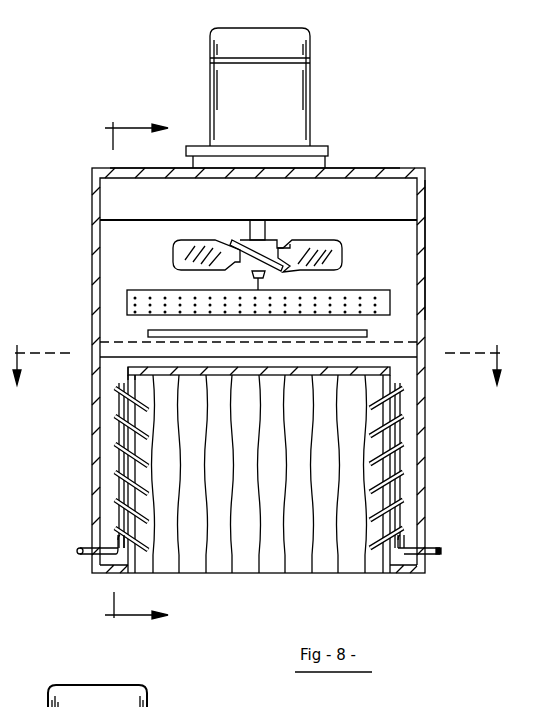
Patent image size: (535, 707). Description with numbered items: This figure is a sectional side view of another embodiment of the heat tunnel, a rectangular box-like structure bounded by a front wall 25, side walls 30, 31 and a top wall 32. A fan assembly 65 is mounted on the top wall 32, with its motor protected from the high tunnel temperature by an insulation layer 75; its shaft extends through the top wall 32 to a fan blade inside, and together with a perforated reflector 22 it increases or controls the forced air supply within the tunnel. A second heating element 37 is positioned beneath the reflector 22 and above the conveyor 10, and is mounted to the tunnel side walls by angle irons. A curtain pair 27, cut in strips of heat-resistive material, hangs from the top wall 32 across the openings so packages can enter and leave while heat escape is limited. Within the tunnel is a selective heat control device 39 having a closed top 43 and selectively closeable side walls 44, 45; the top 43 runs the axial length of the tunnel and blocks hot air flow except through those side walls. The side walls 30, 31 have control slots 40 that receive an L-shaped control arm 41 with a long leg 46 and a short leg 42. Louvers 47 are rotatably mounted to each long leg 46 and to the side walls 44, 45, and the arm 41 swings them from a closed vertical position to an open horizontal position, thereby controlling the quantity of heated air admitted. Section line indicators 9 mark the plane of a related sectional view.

The fan assembly 65 is at (318, 72).
The top wall 32 is at (397, 168).
The insulation layer 75 is at (400, 202).
The front wall 25 is at (428, 230).
The side wall 30 is at (412, 284).
The side wall 31 is at (90, 273).
The reflector 22 is at (353, 282).
The second heating element 37 is at (373, 333).
The closed top 43 is at (418, 348).
The side wall 44 is at (405, 378).
The side wall 45 is at (128, 370).
The curtain pair 27 is at (375, 437).
The selective heat control device 39 is at (252, 466).
The louvers 47 is at (115, 461).
The long leg 46 is at (116, 494).
The control slots 40 is at (91, 525).
The L-shaped control arm 41 is at (88, 558).
The short leg 42 is at (78, 548).
The section line 9- 9 is at (119, 377).
The conveyor 10 is at (260, 379).